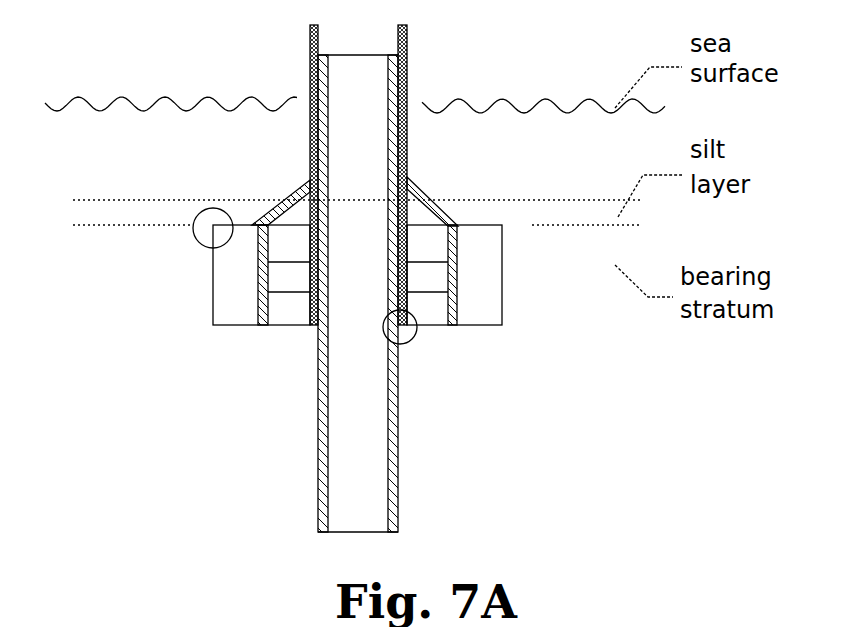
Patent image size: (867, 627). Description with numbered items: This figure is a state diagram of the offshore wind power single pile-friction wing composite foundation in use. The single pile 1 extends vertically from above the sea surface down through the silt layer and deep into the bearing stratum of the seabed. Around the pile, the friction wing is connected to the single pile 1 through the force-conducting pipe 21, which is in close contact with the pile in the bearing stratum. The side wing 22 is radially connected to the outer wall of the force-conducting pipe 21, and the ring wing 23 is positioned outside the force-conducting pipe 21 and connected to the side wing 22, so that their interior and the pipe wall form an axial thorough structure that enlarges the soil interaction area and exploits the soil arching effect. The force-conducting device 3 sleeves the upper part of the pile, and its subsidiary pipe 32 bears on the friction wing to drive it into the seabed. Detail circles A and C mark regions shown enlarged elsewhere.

The single pile 1 is at (408, 102).
The force-conducting device 3 is at (310, 90).
The force-conducting pipe 21 is at (315, 327).
The side wing 22 is at (502, 267).
The ring wing 23 is at (460, 226).
The subsidiary pipe 32 is at (300, 187).
The detail region A is at (413, 338).
The detail region C is at (200, 243).